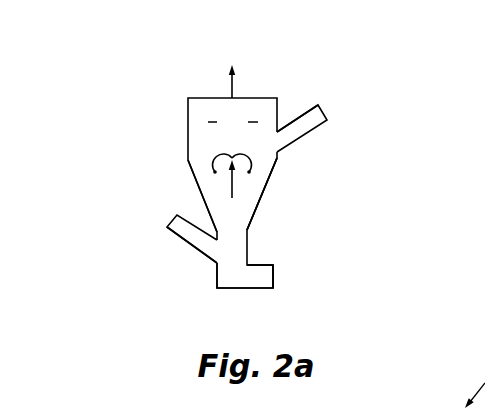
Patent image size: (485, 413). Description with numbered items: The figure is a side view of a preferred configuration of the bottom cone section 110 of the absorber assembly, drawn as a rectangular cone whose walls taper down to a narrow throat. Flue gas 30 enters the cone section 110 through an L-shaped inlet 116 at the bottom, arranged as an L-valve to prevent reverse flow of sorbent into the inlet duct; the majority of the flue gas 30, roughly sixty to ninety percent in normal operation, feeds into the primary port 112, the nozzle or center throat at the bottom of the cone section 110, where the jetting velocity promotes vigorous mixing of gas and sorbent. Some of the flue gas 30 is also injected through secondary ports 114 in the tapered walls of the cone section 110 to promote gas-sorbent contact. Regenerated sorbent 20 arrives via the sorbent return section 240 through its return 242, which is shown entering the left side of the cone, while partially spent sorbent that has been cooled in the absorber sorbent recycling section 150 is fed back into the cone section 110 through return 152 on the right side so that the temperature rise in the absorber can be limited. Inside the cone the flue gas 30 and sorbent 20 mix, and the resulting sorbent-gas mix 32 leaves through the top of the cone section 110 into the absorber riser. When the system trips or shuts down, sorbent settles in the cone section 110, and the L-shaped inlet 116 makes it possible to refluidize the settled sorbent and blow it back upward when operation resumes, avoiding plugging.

The bottom cone section 110 is at (274, 73).
The sorbent-gas mix 32 is at (232, 72).
The regenerated sorbent 20 is at (330, 105).
The return 152 is at (285, 130).
The absorber sorbent recycling section 150 is at (308, 144).
The secondary ports 114 is at (203, 202).
The flue gas 30 is at (266, 200).
The primary port 112 is at (255, 275).
The sorbent return section 240 is at (160, 241).
The return 242 is at (193, 246).
The L-shaped inlet 116 is at (195, 289).